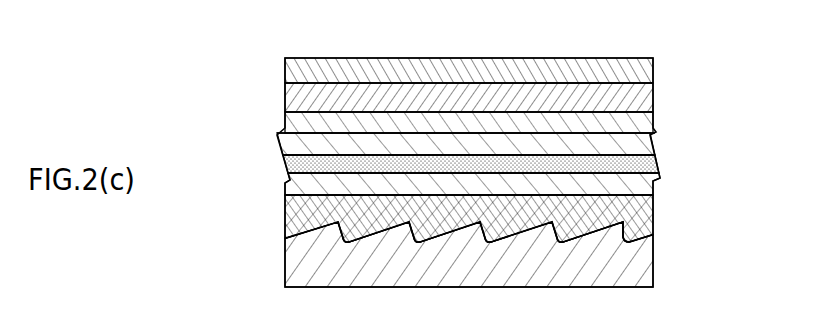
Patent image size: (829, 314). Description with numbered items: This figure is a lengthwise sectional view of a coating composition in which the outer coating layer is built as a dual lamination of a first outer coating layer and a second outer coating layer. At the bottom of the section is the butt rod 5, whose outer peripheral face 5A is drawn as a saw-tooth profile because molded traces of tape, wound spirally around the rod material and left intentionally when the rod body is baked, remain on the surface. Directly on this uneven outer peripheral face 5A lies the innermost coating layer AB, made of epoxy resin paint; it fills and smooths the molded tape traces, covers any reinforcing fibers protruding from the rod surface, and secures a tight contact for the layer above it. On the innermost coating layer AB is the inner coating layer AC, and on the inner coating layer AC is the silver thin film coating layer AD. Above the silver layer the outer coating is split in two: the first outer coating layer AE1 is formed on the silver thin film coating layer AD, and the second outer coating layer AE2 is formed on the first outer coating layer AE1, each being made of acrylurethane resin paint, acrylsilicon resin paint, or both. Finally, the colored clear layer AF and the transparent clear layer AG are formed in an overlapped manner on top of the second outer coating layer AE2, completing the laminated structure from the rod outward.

The transparent clear layer AG is at (653, 70).
The colored clear layer AF is at (653, 98).
The second outer coating layer AE2 is at (653, 122).
The first outer coating layer AE1 is at (656, 146).
The silver thin film coating layer AD is at (660, 170).
The inner coating layer AC is at (650, 185).
The innermost coating layer AB is at (650, 217).
The butt rod 5 is at (303, 263).
The outer peripheral face 5A is at (335, 221).